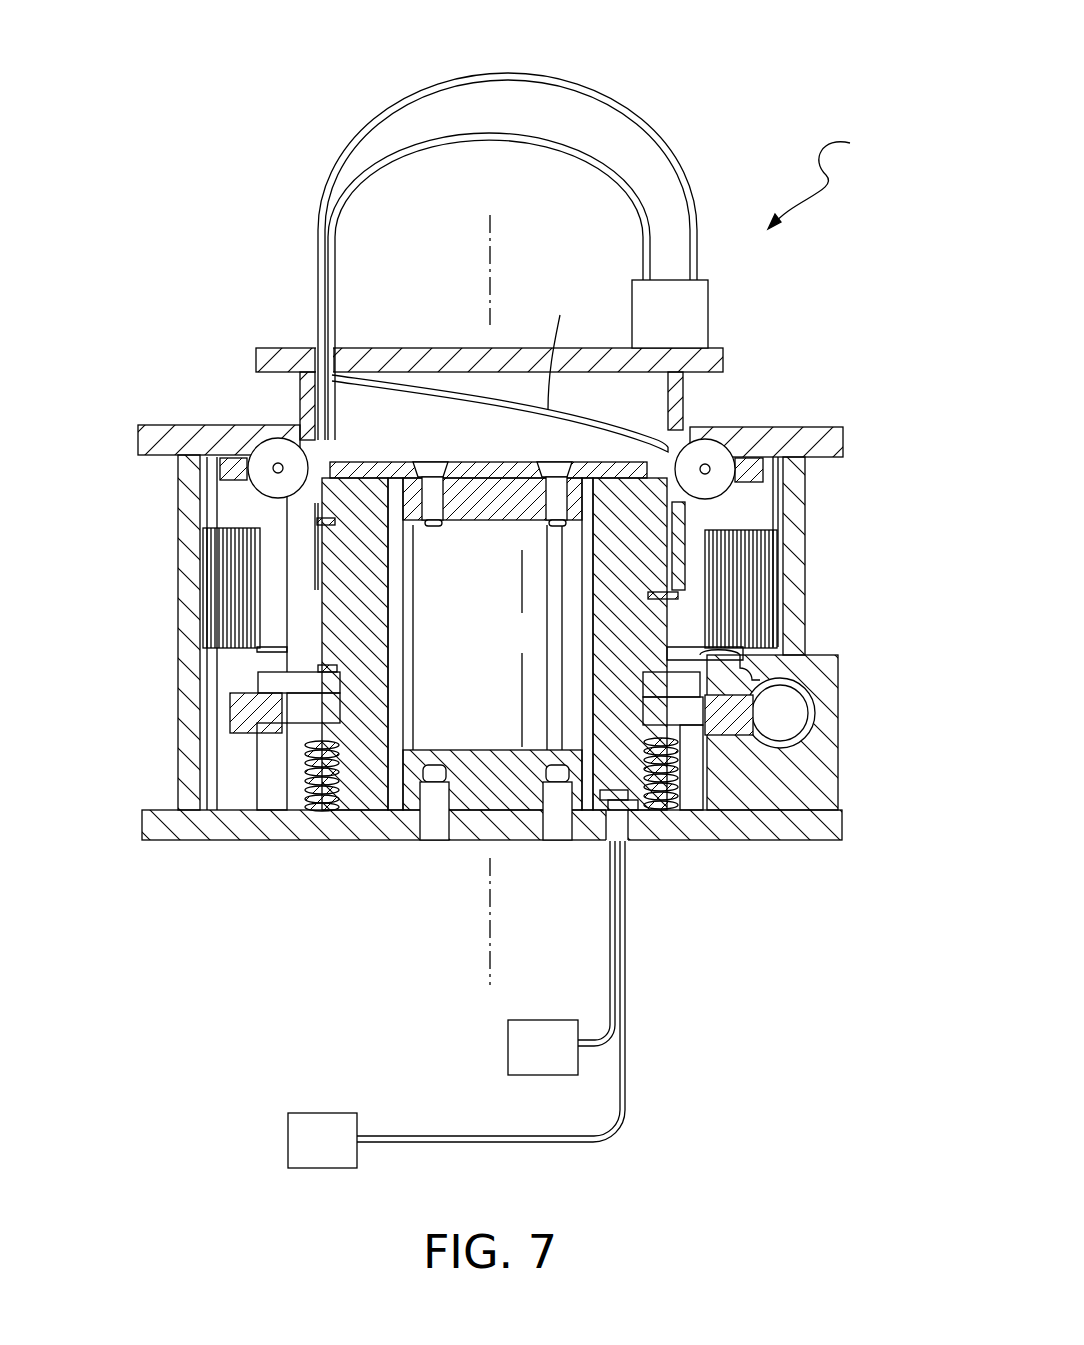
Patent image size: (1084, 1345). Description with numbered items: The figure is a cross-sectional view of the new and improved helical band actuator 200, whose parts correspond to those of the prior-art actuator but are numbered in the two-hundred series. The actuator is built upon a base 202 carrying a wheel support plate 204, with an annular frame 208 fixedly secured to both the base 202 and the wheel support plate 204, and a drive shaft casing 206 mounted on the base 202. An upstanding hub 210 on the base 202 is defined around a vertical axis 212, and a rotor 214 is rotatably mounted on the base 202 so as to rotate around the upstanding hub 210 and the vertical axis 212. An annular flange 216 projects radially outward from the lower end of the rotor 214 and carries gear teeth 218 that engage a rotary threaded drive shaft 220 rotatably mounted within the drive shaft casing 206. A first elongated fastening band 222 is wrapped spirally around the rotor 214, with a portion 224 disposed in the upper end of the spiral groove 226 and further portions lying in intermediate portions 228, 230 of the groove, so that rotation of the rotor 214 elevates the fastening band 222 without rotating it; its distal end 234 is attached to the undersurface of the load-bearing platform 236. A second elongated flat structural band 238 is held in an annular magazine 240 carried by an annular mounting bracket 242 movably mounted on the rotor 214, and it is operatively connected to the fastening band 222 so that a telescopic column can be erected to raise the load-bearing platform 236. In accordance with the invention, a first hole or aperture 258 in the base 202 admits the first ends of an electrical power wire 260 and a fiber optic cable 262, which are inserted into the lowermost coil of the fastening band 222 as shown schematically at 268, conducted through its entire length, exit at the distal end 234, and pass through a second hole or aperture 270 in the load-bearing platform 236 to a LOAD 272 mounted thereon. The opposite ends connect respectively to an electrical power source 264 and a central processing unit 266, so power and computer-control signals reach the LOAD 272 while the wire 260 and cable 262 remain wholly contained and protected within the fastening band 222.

The helical band actuator 200 is at (838, 176).
The base 202 is at (677, 832).
The wheel support plate 204 is at (830, 440).
The drive shaft casing 206 is at (800, 778).
The annular frame 208 is at (183, 784).
The upstanding hub 210 is at (567, 560).
The vertical axis 212 is at (492, 218).
The rotor 214 is at (372, 770).
The annular flange 216 is at (243, 752).
The gear teeth 218 is at (751, 740).
The rotary threaded drive shaft 220 is at (790, 715).
The first elongated fastening band 222 is at (307, 905).
The portion of the first elongated fastening band 224 is at (320, 500).
The spiral groove 226 is at (262, 577).
The intermediate portion of the spiral groove 228 is at (665, 610).
The intermediate portion of the spiral groove 230 is at (330, 670).
The distal end of the first elongated fastening band 234 is at (312, 405).
The load-bearing platform 236 is at (443, 362).
The second elongated flat structural band 238 is at (220, 630).
The annular magazine 240 is at (787, 542).
The annular mounting bracket 242 is at (265, 770).
The first hole or aperture 258 is at (600, 810).
The electrical power wire 260 is at (413, 85).
The fiber optic cable 262 is at (562, 140).
The electrical power source 264 is at (288, 1140).
The central processing unit 266 is at (508, 1045).
The insertion point into lowermost coil 268 is at (625, 790).
The second hole or aperture 270 is at (323, 362).
The LOAD 272 is at (708, 312).